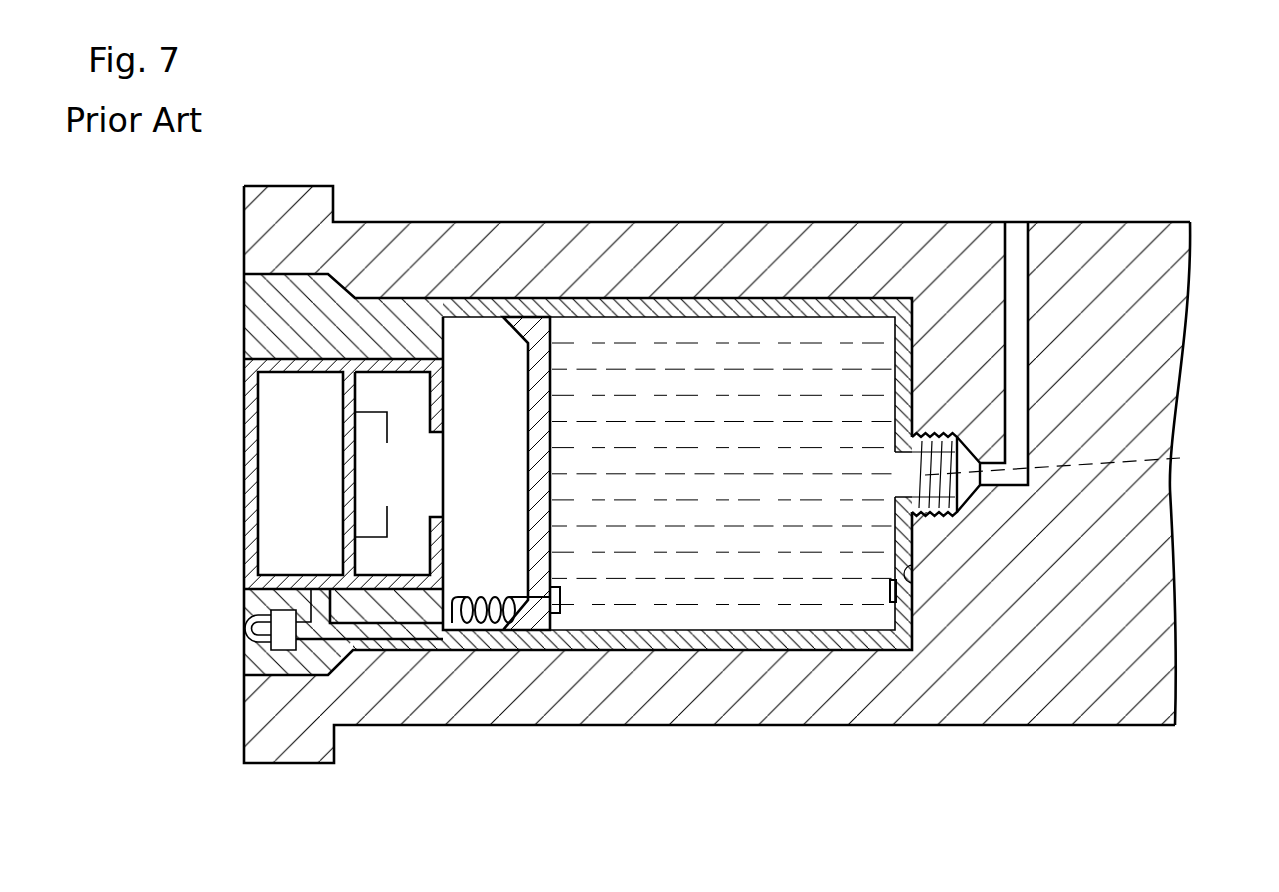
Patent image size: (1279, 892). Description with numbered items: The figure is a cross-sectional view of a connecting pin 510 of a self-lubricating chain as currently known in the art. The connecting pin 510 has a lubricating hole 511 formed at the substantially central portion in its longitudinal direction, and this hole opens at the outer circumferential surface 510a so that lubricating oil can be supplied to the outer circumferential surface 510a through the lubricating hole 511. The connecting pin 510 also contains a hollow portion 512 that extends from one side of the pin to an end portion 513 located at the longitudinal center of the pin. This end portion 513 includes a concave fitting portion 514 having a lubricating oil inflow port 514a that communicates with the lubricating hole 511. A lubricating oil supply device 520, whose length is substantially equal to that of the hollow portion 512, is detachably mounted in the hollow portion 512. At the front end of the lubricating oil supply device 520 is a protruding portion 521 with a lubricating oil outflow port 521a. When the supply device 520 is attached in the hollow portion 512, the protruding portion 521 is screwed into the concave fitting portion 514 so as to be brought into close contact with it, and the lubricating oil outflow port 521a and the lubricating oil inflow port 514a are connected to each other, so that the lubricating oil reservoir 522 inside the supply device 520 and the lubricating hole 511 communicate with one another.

The connecting pin 510 is at (690, 245).
The outer circumferential surface 510a is at (1108, 222).
The lubricating hole 511 is at (1020, 327).
The hollow portion 512 is at (523, 303).
The end portion 513 is at (913, 576).
The concave fitting portion 514 is at (947, 435).
The lubricating oil inflow port 514a is at (963, 490).
The lubricating oil supply device 520 is at (260, 317).
The protruding portion 521 is at (923, 502).
The lubricating oil outflow port 521a is at (1093, 459).
The lubricating oil reservoir 522 is at (752, 597).